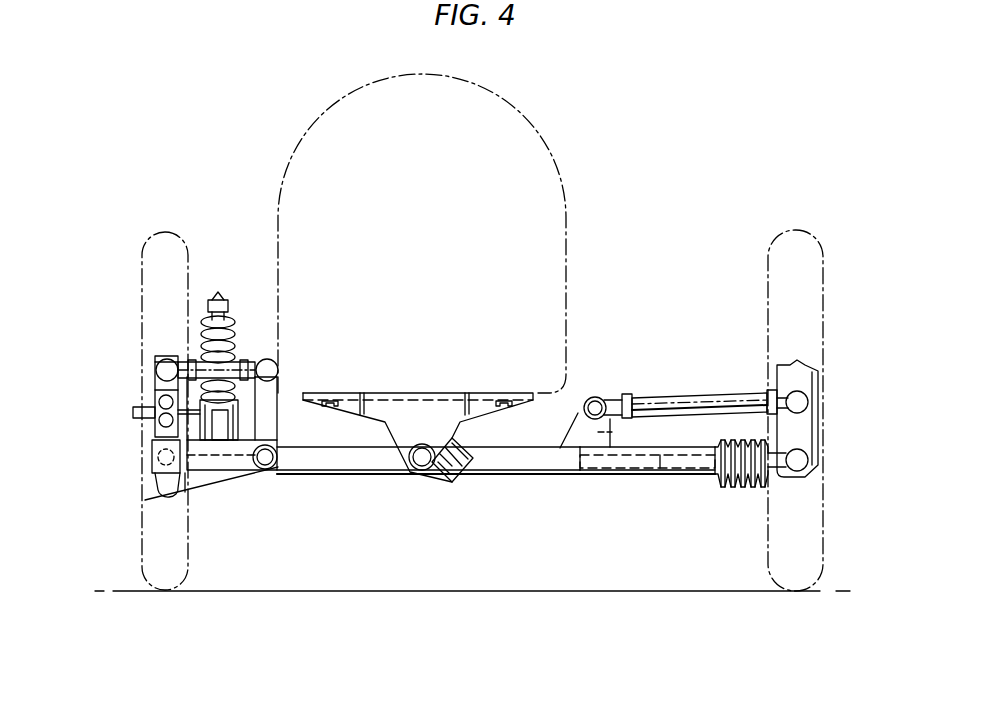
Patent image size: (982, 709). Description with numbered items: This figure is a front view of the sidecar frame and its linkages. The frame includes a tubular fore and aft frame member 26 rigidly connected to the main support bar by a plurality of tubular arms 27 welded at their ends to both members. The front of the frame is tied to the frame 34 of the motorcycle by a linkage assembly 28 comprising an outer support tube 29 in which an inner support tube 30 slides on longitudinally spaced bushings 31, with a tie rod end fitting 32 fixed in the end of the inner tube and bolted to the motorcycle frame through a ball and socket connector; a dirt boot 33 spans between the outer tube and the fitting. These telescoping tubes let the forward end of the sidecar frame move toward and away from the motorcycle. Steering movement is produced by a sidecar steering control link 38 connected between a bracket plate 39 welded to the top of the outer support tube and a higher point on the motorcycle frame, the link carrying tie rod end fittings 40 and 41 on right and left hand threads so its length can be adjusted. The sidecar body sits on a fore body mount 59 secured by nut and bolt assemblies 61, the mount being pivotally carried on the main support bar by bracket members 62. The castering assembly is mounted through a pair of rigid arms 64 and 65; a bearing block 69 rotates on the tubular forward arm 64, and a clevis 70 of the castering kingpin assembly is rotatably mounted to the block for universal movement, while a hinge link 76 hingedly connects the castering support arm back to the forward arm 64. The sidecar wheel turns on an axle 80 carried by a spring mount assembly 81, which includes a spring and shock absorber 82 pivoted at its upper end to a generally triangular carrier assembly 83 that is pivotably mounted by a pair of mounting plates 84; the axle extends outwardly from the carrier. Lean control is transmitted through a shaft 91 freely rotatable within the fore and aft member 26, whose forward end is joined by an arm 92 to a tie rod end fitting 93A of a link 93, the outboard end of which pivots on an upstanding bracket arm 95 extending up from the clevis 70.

The tubular fore and aft frame member 26 is at (286, 470).
The tubular arms 27 is at (358, 473).
The linkage assembly 28 is at (677, 390).
The outer support tube 29 is at (526, 474).
The inner support tube 30 is at (646, 470).
The bushings 31 is at (592, 476).
The tie rod end fitting 32 is at (795, 478).
The dirt boot 33 is at (738, 483).
The frame of the motorcycle 34 is at (812, 416).
The sidecar steering control link 38 is at (720, 398).
The bracket plate 39 is at (561, 447).
The tie rod end fitting 40 is at (612, 400).
The tie rod end fitting 41 is at (785, 398).
The fore body mount 59 is at (416, 400).
The nut and bolt assemblies 61 is at (330, 407).
The bracket members 62 is at (446, 478).
The forward arm 64 is at (252, 460).
The rigid arm 65 is at (183, 498).
The bearing block 69 is at (152, 462).
The clevis 70 is at (160, 481).
The hinge link 76 is at (158, 496).
The axle 80 is at (134, 411).
The spring mount assembly 81 is at (186, 338).
The spring and shock absorber 82 is at (232, 342).
The carrier assembly 83 is at (218, 294).
The mounting plates 84 is at (221, 470).
The shaft 91 is at (267, 470).
The arm 92 is at (272, 396).
The link 93 is at (232, 370).
The tie rod end fitting 93A is at (277, 366).
The upstanding bracket arm 95 is at (157, 364).